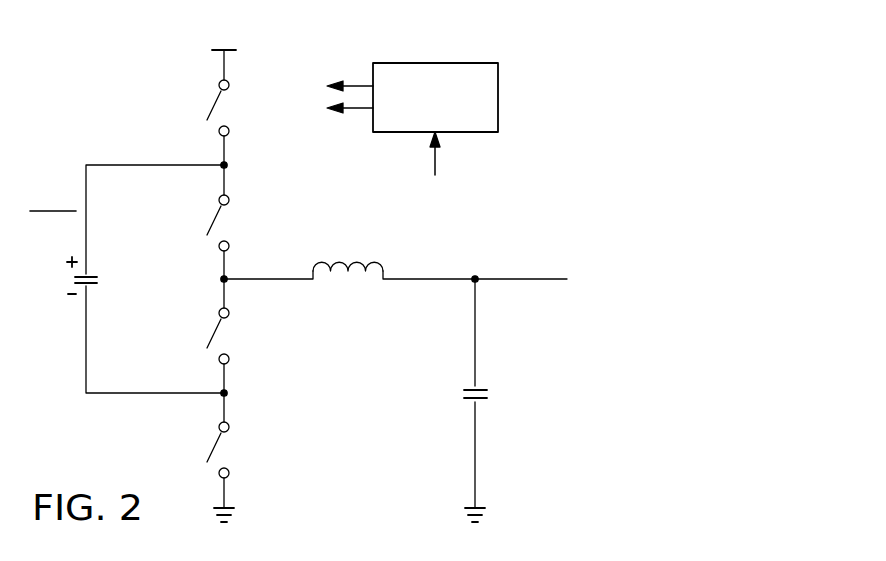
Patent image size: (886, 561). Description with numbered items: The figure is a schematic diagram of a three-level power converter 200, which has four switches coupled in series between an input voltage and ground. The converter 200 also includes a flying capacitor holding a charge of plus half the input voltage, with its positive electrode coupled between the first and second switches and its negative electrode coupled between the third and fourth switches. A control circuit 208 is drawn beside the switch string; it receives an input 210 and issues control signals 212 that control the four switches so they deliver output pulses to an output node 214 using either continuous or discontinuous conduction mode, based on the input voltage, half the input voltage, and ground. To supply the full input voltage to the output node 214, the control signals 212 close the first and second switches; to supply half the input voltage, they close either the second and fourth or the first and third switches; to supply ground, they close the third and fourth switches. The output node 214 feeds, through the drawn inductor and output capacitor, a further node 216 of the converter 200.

The three-level power converter 200 is at (157, 59).
The control circuit 208 is at (457, 113).
The controller input signal 210 is at (437, 159).
The control signals 212 is at (355, 84).
The output node 214 is at (221, 278).
The output node 216 is at (476, 276).